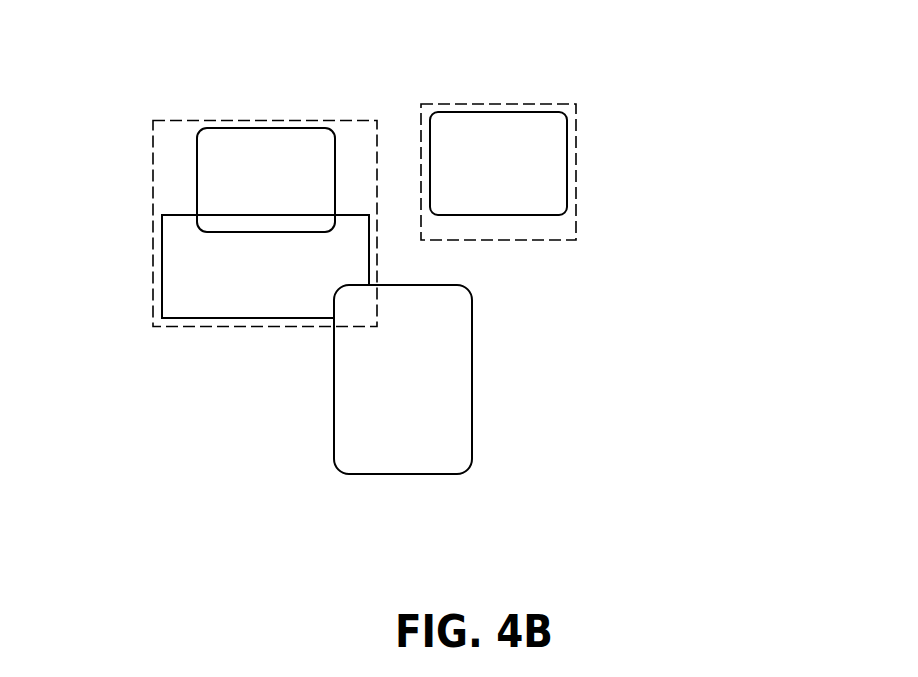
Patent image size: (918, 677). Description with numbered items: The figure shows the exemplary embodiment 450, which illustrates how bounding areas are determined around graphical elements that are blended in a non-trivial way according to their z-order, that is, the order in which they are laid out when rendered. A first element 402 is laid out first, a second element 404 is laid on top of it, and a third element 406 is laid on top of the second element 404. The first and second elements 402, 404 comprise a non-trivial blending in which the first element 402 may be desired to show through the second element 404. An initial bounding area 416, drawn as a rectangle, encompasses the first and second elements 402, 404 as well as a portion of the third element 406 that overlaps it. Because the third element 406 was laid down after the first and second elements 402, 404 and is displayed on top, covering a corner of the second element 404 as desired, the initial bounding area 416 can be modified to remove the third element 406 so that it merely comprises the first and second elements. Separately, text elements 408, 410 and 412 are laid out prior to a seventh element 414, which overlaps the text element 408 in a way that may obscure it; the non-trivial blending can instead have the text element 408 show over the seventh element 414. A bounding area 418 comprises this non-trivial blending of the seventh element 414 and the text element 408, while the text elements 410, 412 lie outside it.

The exemplary embodiment 450 is at (151, 53).
The first element 402 is at (198, 130).
The second element 404 is at (162, 215).
The third element 406 is at (334, 378).
The text element 408 is at (540, 240).
The text element 410 is at (627, 240).
The text element 412 is at (713, 240).
The seventh element 414 is at (497, 110).
The initial bounding area 416 is at (180, 326).
The bounding area 418 is at (577, 104).